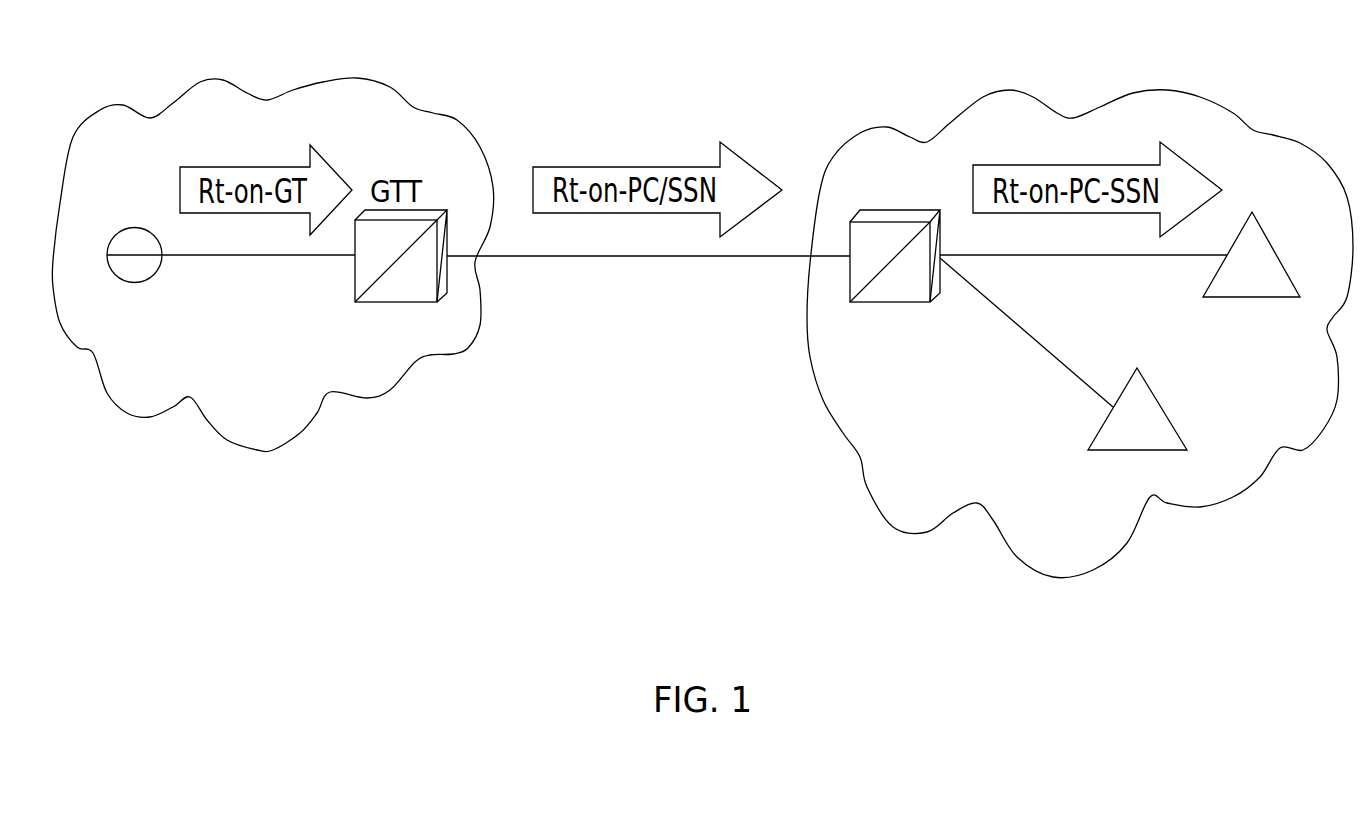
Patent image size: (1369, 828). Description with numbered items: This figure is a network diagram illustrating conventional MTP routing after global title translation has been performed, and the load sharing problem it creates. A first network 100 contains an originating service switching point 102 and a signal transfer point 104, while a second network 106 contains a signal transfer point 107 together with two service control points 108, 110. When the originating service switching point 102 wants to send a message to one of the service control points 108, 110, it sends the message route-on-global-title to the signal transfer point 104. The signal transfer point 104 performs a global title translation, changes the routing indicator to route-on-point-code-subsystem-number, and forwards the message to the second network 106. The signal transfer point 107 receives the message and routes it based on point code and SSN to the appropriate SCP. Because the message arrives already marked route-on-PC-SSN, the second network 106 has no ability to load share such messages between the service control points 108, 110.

The first network 100 is at (358, 78).
The service switching point 102 is at (122, 228).
The signal transfer point 104 is at (430, 207).
The second network 106 is at (1023, 90).
The signal transfer point 107 is at (925, 208).
The service control point 108 is at (1277, 253).
The service control point 110 is at (1162, 407).